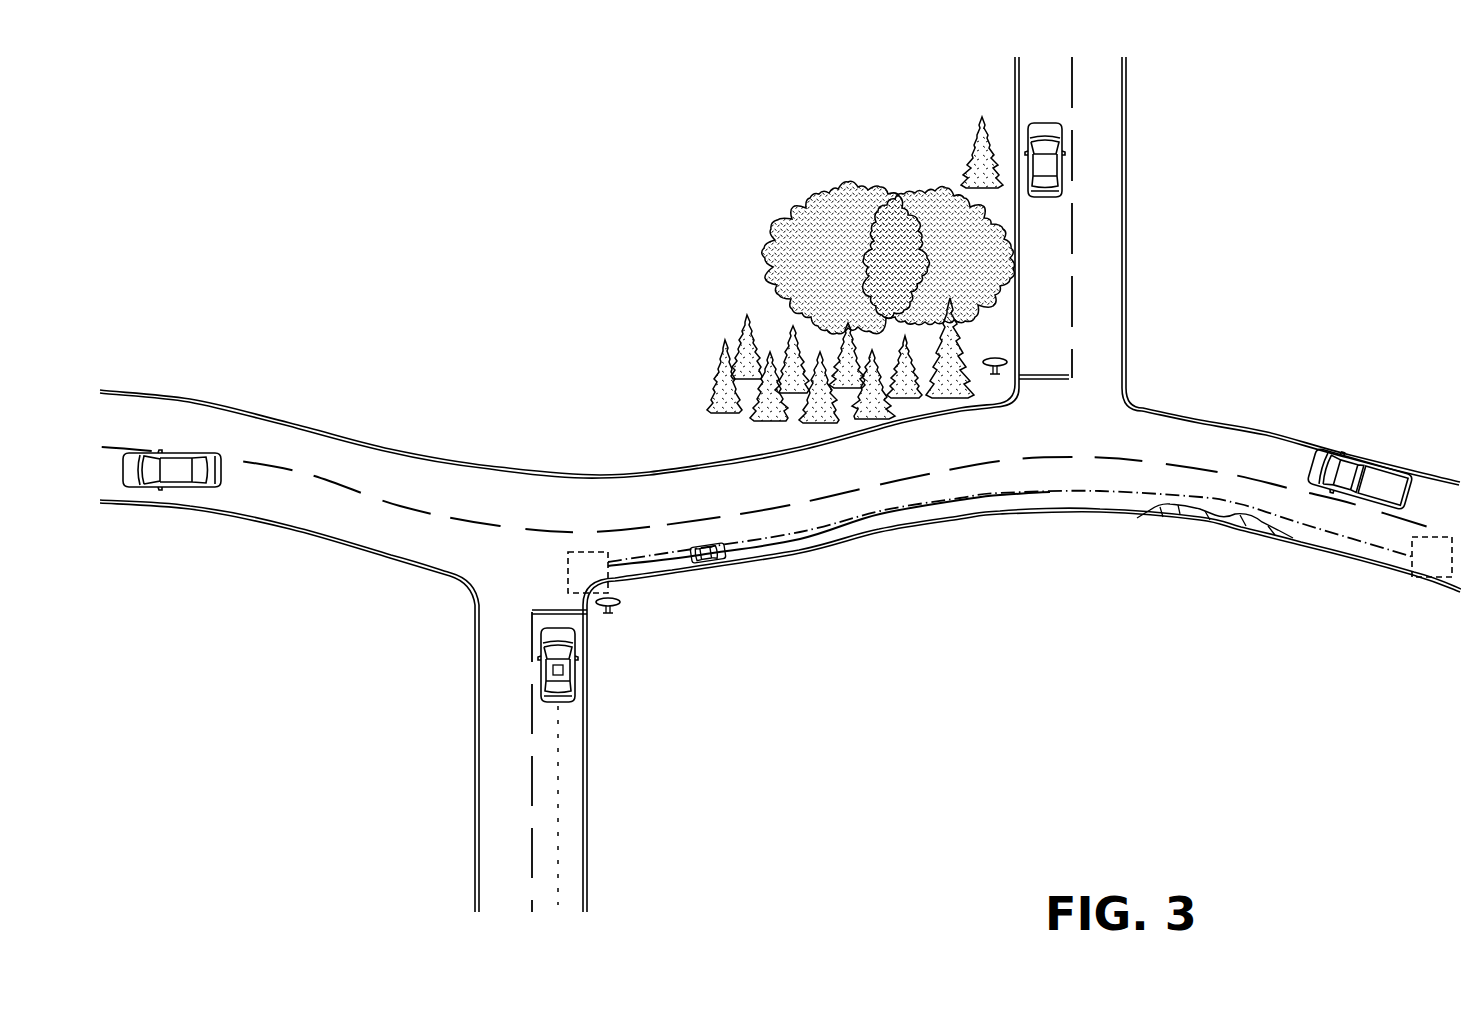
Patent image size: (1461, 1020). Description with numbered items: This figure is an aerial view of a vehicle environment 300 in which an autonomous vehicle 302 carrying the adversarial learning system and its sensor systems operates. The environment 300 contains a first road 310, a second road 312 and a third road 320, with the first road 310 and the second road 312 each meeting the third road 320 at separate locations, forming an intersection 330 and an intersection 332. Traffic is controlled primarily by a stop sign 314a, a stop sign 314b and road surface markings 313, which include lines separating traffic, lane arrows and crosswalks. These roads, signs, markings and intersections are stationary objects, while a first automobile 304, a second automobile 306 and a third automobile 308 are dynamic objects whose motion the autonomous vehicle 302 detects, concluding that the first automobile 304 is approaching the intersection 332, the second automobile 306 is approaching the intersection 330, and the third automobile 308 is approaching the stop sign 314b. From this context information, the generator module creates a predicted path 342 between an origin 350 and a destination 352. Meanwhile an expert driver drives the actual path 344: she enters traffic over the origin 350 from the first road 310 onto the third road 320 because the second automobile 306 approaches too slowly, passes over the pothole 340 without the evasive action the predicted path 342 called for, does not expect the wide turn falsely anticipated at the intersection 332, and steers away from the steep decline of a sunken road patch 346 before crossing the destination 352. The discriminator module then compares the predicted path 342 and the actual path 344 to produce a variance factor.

The environment 300 is at (535, 150).
The autonomous vehicle 302 is at (577, 666).
The first automobile 304 is at (1365, 462).
The second automobile 306 is at (160, 468).
The third automobile 308 is at (1045, 121).
The first road 310 is at (503, 731).
The second road 312 is at (1105, 275).
The road surface markings 313 is at (344, 488).
The stop sign 314a is at (617, 605).
The stop sign 314b is at (988, 374).
The third road 320 is at (650, 506).
The intersection 330 is at (522, 513).
The intersection 332 is at (1109, 429).
The pothole 340 is at (718, 560).
The predicted path 342 is at (856, 522).
The actual path 344 is at (962, 508).
The sunken road patch 346 is at (1192, 512).
The origin 350 is at (568, 580).
The destination 352 is at (1447, 580).